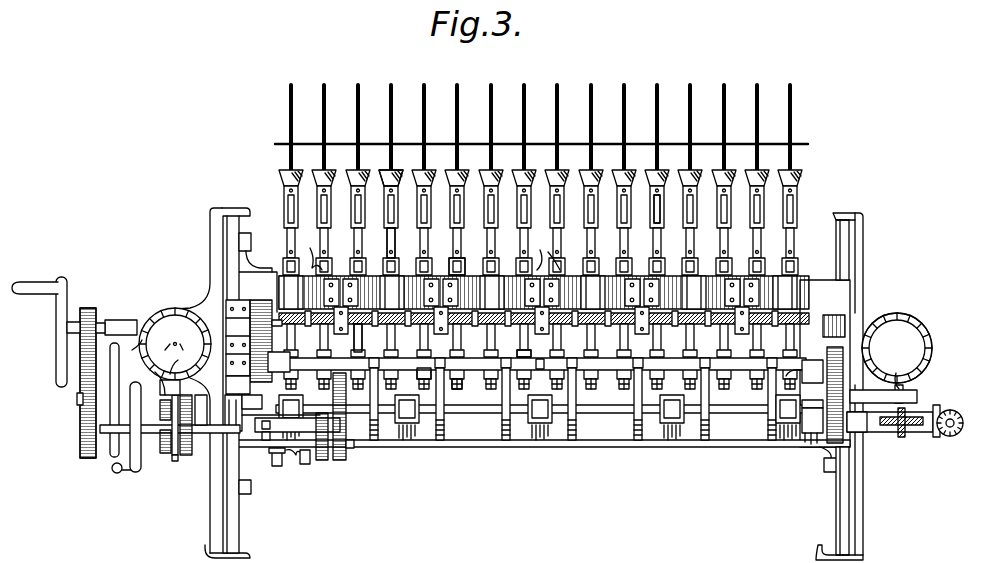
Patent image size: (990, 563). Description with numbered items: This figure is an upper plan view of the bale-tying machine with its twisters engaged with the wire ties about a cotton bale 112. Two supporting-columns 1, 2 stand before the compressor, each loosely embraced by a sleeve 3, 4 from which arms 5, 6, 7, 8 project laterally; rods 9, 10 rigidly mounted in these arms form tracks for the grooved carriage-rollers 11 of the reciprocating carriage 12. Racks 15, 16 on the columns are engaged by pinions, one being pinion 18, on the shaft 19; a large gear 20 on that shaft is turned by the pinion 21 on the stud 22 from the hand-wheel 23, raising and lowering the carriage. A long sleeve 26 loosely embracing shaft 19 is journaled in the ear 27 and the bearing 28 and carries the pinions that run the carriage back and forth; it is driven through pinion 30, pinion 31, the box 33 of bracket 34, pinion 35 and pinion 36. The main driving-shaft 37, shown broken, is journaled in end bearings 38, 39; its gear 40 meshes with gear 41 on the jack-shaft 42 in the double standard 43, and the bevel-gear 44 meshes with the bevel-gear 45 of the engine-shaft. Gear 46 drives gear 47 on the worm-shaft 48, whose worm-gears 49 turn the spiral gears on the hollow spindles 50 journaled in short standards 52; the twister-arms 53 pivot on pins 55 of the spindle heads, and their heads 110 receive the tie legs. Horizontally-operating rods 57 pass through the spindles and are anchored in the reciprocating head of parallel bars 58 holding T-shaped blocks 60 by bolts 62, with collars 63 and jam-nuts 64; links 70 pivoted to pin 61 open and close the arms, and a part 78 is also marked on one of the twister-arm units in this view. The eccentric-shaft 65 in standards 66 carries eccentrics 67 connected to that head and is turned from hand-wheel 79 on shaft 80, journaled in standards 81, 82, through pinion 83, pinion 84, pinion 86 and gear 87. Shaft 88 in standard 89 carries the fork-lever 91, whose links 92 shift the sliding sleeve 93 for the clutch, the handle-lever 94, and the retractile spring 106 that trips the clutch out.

The supporting-column 1 is at (183, 321).
The supporting-column 2 is at (897, 348).
The sleeve 3 is at (162, 313).
The sleeve 4 is at (918, 323).
The arm 5 is at (210, 520).
The arm 6 is at (205, 232).
The arm 7 is at (863, 225).
The arm 8 is at (866, 512).
The rod 9 is at (239, 235).
The rod 10 is at (836, 226).
The grooved carriage-roller 11 is at (251, 240).
The reciprocating carriage 12 is at (472, 447).
The rack 15 is at (172, 367).
The rack 16 is at (896, 374).
The pinion 18 is at (890, 419).
The shaft 19 is at (75, 401).
The large gear 20 is at (76, 428).
The pinion 21 is at (89, 308).
The stud 22 is at (112, 318).
The hand-wheel 23 is at (56, 305).
The long sleeve 26 is at (105, 457).
The ear 27 is at (169, 394).
The bearing 28 is at (883, 395).
The pinion 30 is at (163, 352).
The pinion 31 is at (165, 453).
The box 33 is at (173, 461).
The bracket 34 is at (166, 430).
The pinion 35 is at (185, 455).
The pinion 36 is at (187, 352).
The main driving-shaft 37 is at (555, 338).
The end bearing 38 is at (238, 338).
The end bearing 39 is at (804, 371).
The gear 40 is at (826, 350).
The gear 41 is at (822, 460).
The jack-shaft 42 is at (812, 398).
The double standard 43 is at (812, 426).
The bevel-gear 44 is at (937, 405).
The bevel-gear 45 is at (959, 413).
The gear 46 is at (238, 389).
The gear 47 is at (262, 305).
The worm-shaft 48 is at (562, 326).
The worm-gear 49 is at (330, 332).
The hollow spindle 50 is at (459, 249).
The short standard 52 is at (551, 292).
The twister-arm 53 is at (453, 244).
The pin 55 is at (548, 253).
The horizontally-operating rod 57 is at (545, 356).
The parallel bar 58 is at (542, 364).
The T-shaped block 60 is at (577, 383).
The pin 61 is at (396, 235).
The bolt 62 is at (545, 364).
The collar 63 is at (574, 347).
The jam-nut 64 is at (460, 380).
The eccentric-shaft 65 is at (541, 418).
The standard 66 is at (539, 417).
The eccentric 67 is at (545, 399).
The link 70 is at (318, 213).
The slot 78 is at (654, 192).
The hand-wheel 79 is at (134, 473).
The short shaft 80 is at (203, 435).
The standard 81 is at (234, 413).
The standard 82 is at (346, 416).
The pinion 83 is at (297, 426).
The pinion 84 is at (322, 458).
The pinion 86 is at (345, 455).
The gear 87 is at (350, 368).
The shaft 88 is at (272, 419).
The standard 89 is at (268, 440).
The fork-lever 91 is at (254, 404).
The link 92 is at (281, 336).
The sliding sleeve 93 is at (279, 362).
The handle-lever 94 is at (277, 466).
The retractile spring 106 is at (340, 452).
The head of twister-arm 110 is at (365, 170).
The bale 112 is at (541, 133).